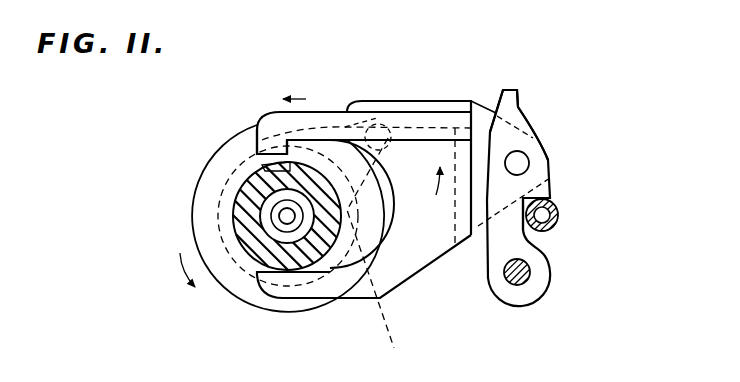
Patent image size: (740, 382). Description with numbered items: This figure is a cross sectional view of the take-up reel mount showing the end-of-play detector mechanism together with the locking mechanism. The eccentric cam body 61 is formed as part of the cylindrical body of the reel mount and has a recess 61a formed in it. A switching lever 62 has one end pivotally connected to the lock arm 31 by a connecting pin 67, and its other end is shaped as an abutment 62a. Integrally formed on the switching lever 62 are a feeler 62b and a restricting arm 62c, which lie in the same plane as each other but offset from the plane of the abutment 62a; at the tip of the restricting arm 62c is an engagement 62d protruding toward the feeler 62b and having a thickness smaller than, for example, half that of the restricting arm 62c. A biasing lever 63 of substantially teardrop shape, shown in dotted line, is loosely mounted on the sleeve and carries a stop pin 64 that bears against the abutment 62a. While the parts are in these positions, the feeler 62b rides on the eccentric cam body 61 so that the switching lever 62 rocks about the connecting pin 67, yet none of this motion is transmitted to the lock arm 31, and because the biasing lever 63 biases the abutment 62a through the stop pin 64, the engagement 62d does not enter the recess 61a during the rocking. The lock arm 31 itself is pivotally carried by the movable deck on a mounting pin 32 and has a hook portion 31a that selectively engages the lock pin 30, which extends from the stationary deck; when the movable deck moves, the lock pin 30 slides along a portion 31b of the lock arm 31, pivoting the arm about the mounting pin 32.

The lock pin 30 is at (558, 222).
The lock arm 31 is at (488, 290).
The hook portion 31a is at (540, 195).
The portion of the lock arm 31b is at (530, 121).
The mounting pin 32 is at (530, 272).
The eccentric cam body 61 is at (231, 219).
The recess 61a is at (255, 172).
The switching lever 62 is at (430, 145).
The abutment 62a is at (418, 101).
The feeler 62b is at (323, 290).
The restricting arm 62c is at (300, 112).
The engagement 62d is at (262, 148).
The biasing lever 63 is at (401, 250).
The stop pin 64 is at (378, 124).
The connecting pin 67 is at (519, 163).